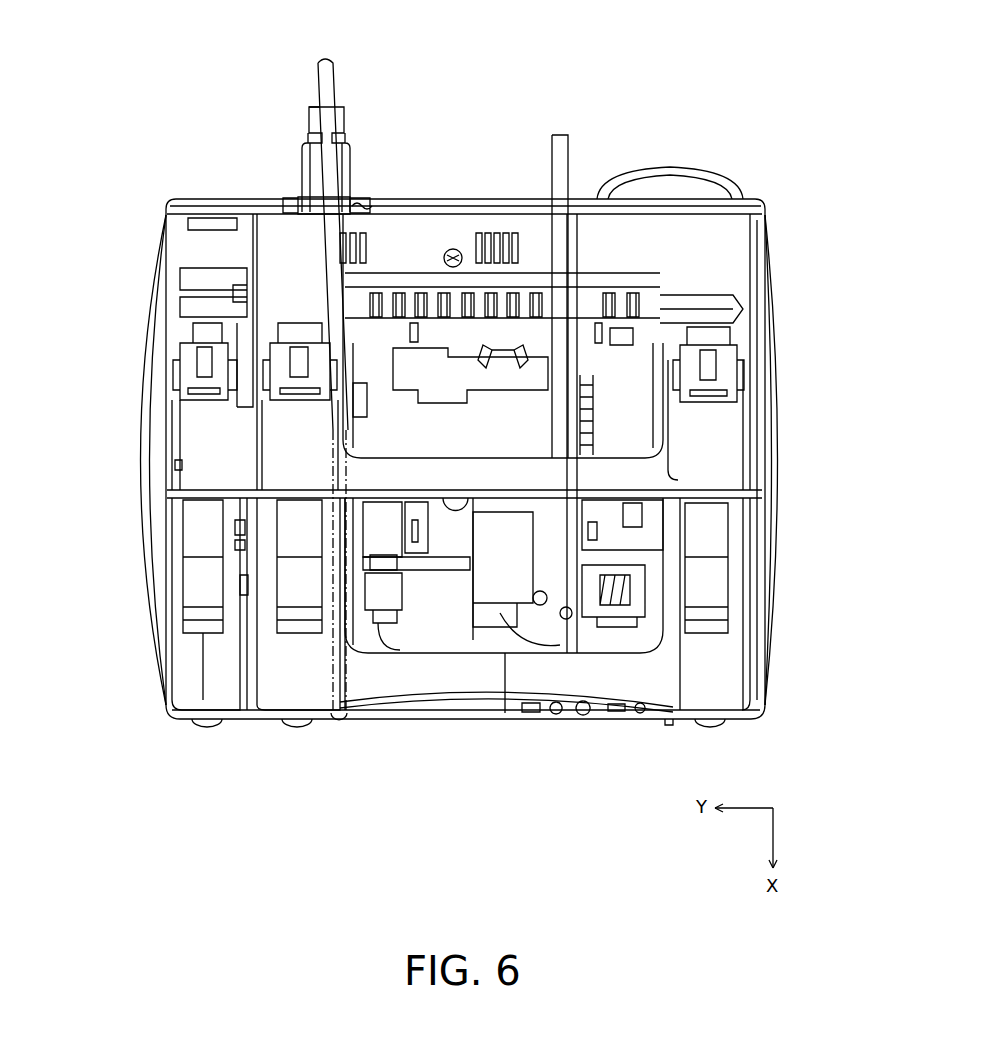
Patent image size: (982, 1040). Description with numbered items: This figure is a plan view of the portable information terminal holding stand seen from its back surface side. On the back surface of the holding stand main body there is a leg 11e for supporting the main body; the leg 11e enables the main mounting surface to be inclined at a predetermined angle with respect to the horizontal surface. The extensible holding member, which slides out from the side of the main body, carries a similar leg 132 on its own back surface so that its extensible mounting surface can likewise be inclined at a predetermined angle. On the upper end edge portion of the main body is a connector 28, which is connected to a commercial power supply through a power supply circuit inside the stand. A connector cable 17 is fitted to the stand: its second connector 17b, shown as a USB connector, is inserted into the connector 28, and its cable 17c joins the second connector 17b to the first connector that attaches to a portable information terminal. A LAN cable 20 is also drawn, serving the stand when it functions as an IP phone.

The connector cable 17 is at (342, 178).
The second connector 17b is at (310, 147).
The cable 17c is at (342, 150).
The connector 28 is at (307, 200).
The LAN cable 20 is at (560, 195).
The leg 132 is at (215, 462).
The leg 11e is at (683, 472).